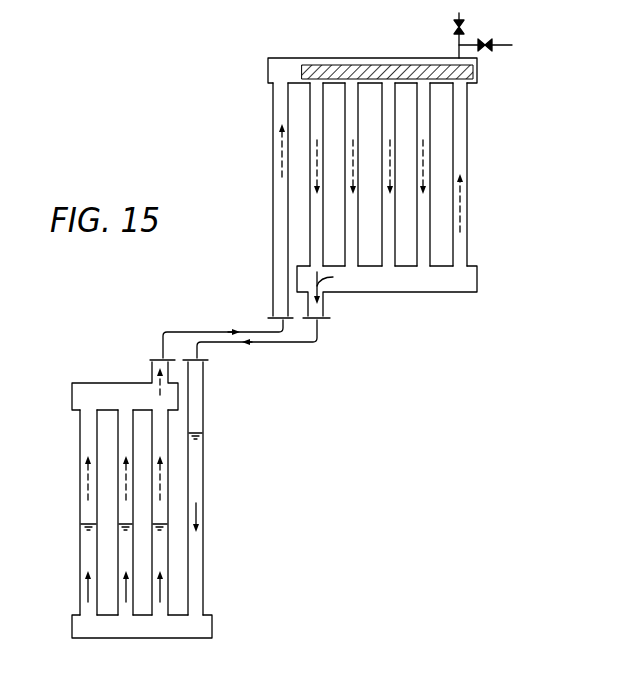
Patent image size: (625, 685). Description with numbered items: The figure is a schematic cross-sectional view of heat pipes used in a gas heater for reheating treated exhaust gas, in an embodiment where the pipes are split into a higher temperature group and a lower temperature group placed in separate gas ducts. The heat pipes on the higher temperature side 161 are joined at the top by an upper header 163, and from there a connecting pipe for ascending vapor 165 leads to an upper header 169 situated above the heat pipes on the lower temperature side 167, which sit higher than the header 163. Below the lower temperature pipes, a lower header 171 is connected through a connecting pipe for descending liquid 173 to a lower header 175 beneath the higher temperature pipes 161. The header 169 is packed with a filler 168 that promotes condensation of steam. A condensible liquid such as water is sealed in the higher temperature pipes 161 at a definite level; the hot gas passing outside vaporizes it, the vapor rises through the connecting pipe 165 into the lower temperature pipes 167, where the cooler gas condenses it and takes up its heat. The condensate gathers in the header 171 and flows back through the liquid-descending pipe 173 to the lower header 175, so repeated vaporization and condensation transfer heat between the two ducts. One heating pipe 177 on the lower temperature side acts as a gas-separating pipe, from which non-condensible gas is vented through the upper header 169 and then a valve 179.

The heat pipes on the higher temperature side 161 is at (80, 474).
The upper header 163 is at (125, 383).
The connecting pipe for ascending vapor 165 is at (210, 331).
The heat pipes on the lower temperature side 167 is at (432, 121).
The filler 168 is at (331, 65).
The upper header 169 is at (373, 58).
The lower header 171 is at (378, 293).
The connecting pipe for descending liquid 173 is at (267, 342).
The lower header 175 is at (130, 638).
The gas-separating heating pipe 177 is at (468, 160).
The valve 179 is at (488, 40).